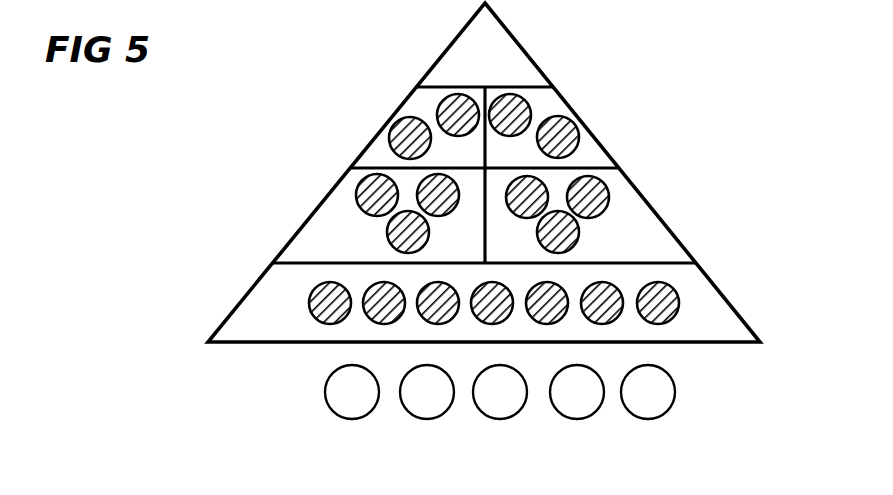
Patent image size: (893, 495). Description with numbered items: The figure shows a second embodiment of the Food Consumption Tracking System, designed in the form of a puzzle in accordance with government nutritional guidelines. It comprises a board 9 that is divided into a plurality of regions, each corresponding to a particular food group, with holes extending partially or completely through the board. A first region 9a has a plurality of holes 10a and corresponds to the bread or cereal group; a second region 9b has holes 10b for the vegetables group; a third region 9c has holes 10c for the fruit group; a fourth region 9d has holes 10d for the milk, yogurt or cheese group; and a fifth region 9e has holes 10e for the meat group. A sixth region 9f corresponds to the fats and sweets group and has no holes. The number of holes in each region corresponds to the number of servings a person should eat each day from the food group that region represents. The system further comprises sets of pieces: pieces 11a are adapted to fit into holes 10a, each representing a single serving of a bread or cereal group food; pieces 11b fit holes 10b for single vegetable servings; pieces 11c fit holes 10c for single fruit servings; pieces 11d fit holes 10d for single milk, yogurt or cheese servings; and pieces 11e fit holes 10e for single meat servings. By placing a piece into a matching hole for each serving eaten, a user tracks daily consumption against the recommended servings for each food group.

The board 9 is at (333, 180).
The first region 9a is at (273, 312).
The second region 9b is at (347, 248).
The third region 9c is at (650, 245).
The fourth region 9d is at (382, 153).
The fifth region 9e is at (590, 157).
The sixth region 9f is at (487, 72).
The holes 10a is at (370, 320).
The holes 10b is at (386, 235).
The holes 10c is at (581, 231).
The holes 10d is at (434, 109).
The holes 10e is at (533, 111).
The pieces 11a is at (350, 420).
The pieces 11b is at (425, 420).
The pieces 11c is at (498, 420).
The pieces 11d is at (573, 420).
The pieces 11e is at (645, 420).